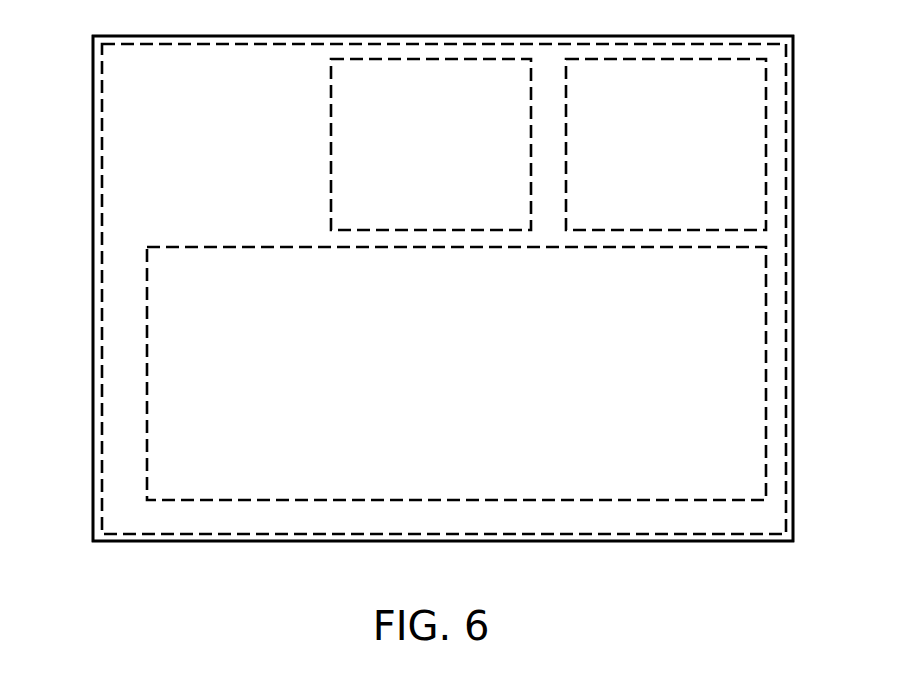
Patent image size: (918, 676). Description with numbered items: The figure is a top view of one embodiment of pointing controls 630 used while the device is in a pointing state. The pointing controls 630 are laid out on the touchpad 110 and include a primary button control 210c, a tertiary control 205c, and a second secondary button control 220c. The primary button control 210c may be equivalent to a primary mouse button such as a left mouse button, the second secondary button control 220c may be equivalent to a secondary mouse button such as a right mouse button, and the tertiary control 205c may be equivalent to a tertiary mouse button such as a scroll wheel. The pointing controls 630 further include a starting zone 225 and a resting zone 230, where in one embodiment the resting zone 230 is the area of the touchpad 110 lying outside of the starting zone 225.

The pointing controls 630 is at (72, 91).
The touchpad 110 is at (794, 218).
The resting zone 230 is at (781, 534).
The primary button control 210c is at (190, 113).
The tertiary control 205c is at (456, 146).
The second secondary button control 220c is at (690, 146).
The starting zone 225 is at (425, 410).